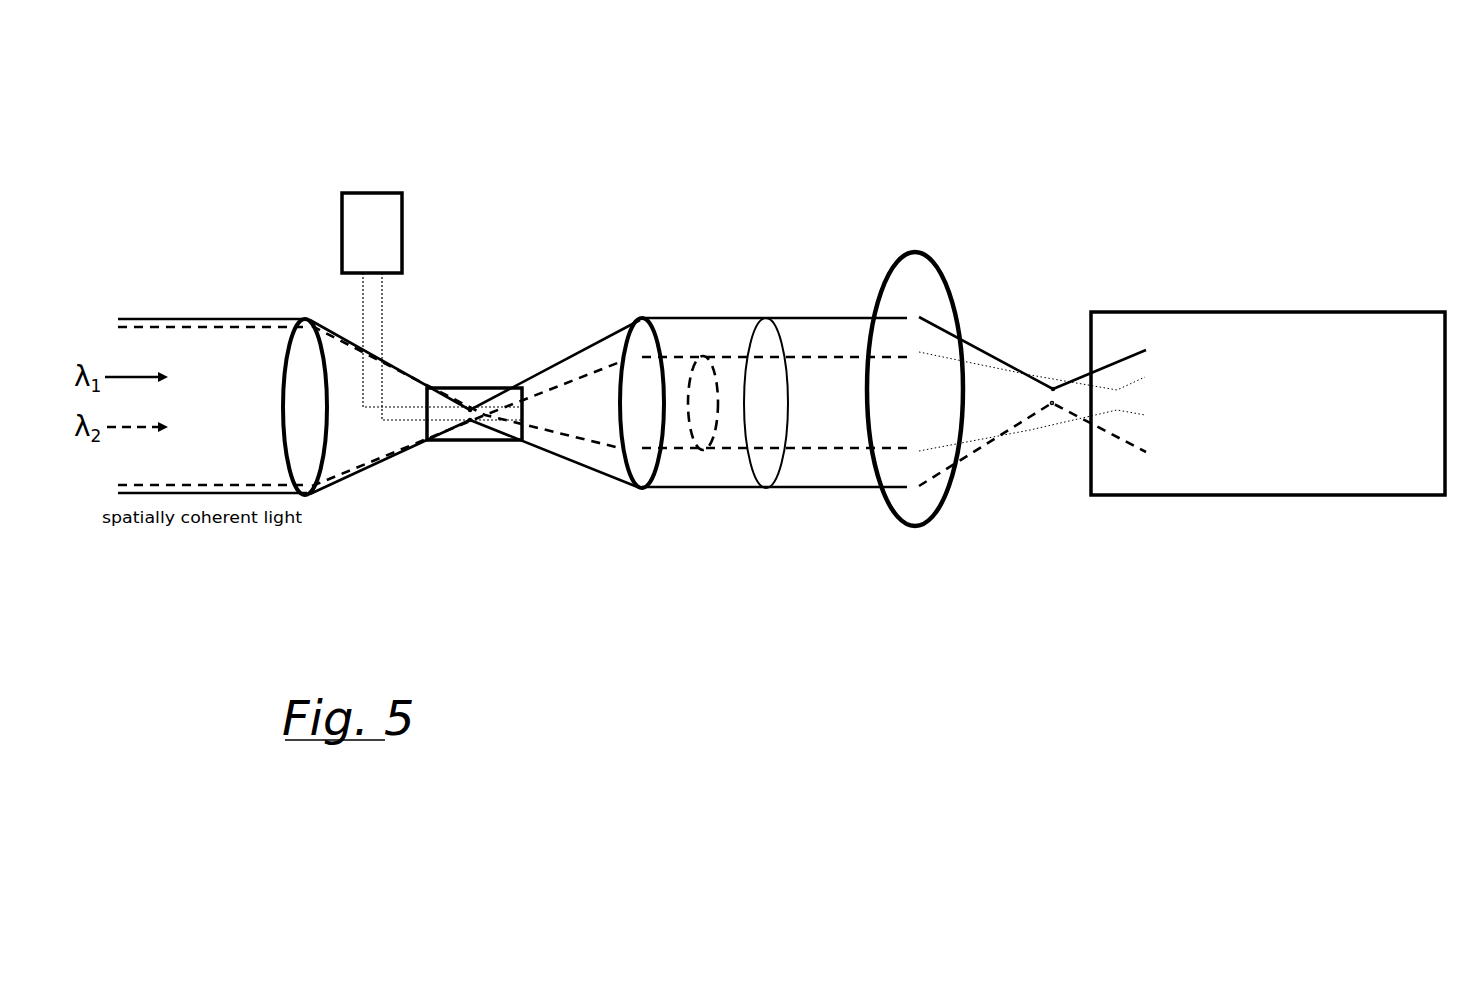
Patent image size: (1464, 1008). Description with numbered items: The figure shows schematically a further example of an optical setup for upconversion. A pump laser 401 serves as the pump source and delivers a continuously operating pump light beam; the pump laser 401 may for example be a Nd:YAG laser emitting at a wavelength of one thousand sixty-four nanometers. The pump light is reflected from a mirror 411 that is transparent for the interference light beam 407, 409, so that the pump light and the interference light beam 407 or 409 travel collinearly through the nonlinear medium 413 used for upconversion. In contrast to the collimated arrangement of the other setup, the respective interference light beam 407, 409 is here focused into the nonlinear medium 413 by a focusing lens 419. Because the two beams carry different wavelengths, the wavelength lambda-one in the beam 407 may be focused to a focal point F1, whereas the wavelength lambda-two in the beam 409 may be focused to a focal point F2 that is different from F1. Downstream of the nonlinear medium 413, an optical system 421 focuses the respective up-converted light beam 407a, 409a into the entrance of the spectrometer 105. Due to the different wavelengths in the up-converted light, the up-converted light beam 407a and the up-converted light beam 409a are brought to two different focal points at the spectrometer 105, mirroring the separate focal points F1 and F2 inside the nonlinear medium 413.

The spectrometer 105 is at (1224, 496).
The pump laser 401 is at (417, 225).
The interference light beam 407 is at (379, 384).
The interference light beam 409 is at (369, 406).
The mirror 411 is at (373, 430).
The nonlinear medium 413 is at (506, 376).
The focusing lens 419 is at (328, 492).
The optical system 421 is at (747, 490).
The up-converted light beam 407a is at (991, 503).
The up-converted light beam 409a is at (808, 355).
The focal point F1 is at (460, 443).
The focal point F2 is at (490, 440).